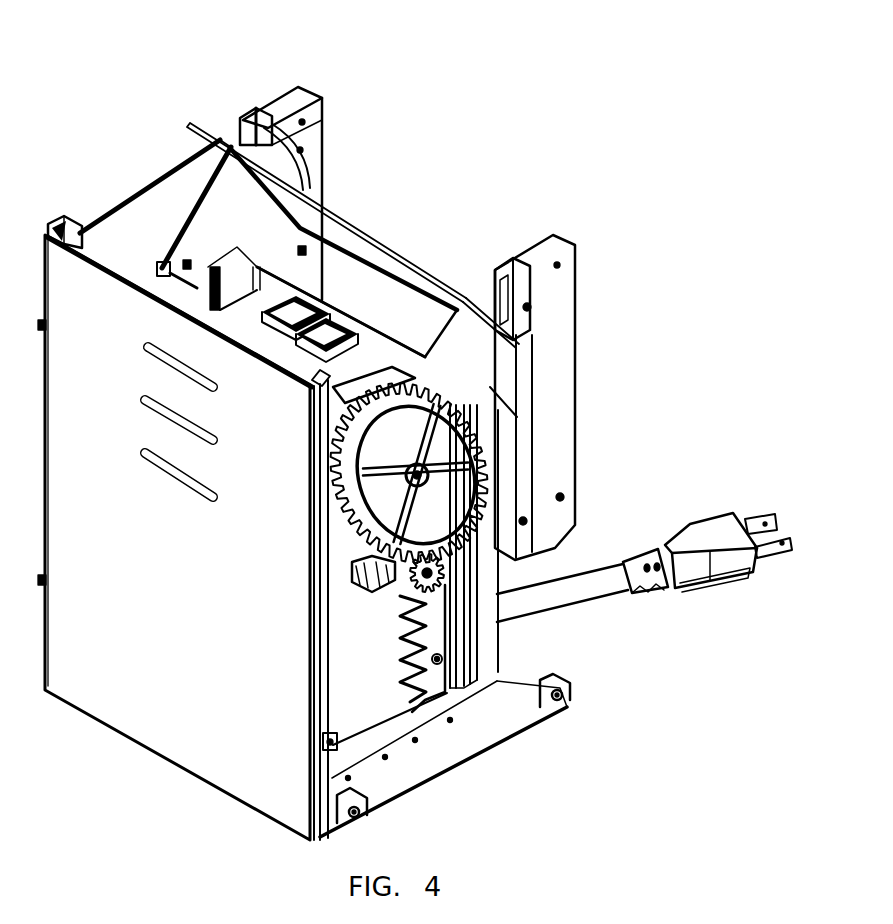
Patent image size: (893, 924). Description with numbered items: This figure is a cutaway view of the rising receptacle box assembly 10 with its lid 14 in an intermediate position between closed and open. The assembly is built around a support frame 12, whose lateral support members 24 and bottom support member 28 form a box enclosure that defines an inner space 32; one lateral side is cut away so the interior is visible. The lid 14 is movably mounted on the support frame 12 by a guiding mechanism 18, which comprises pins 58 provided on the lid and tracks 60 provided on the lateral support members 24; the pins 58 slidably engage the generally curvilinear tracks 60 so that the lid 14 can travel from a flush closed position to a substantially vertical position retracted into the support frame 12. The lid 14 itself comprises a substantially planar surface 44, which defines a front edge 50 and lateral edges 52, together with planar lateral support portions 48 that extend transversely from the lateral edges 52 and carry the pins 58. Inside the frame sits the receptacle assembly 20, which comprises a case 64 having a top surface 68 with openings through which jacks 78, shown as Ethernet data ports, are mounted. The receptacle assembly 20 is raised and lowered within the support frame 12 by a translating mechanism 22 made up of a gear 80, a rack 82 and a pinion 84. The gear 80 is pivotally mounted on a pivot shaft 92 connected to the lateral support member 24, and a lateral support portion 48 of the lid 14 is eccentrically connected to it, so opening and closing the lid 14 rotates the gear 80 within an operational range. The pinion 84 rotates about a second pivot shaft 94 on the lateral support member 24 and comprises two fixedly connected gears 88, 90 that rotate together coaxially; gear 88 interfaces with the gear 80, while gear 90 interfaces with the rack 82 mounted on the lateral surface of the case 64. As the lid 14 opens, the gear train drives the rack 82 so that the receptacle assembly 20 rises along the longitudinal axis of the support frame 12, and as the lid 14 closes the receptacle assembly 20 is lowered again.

The rising receptacle box assembly 10 is at (151, 90).
The support frame 12 is at (132, 711).
The lid 14 is at (333, 220).
The guiding mechanism 18 is at (226, 120).
The receptacle assembly 20 is at (373, 310).
The translating mechanism 22 is at (464, 525).
The lateral support members 24 is at (196, 178).
The bottom support member 28 is at (445, 755).
The inner space 32 is at (317, 380).
The planar surface 44 is at (383, 258).
The lateral support portions 48 is at (215, 228).
The front edge 50 is at (312, 187).
The lateral edges 52 is at (516, 327).
The pins 58 is at (190, 263).
The tracks 60 is at (162, 266).
The case 64 is at (217, 318).
The top surface 68 is at (232, 332).
The jacks 78 is at (333, 338).
The gear 80 is at (482, 438).
The rack 82 is at (433, 680).
The pinion 84 is at (445, 568).
The gear 88 is at (393, 592).
The gear 90 is at (362, 586).
The pivot shaft 92 is at (435, 475).
The pivot shaft 94 is at (446, 590).